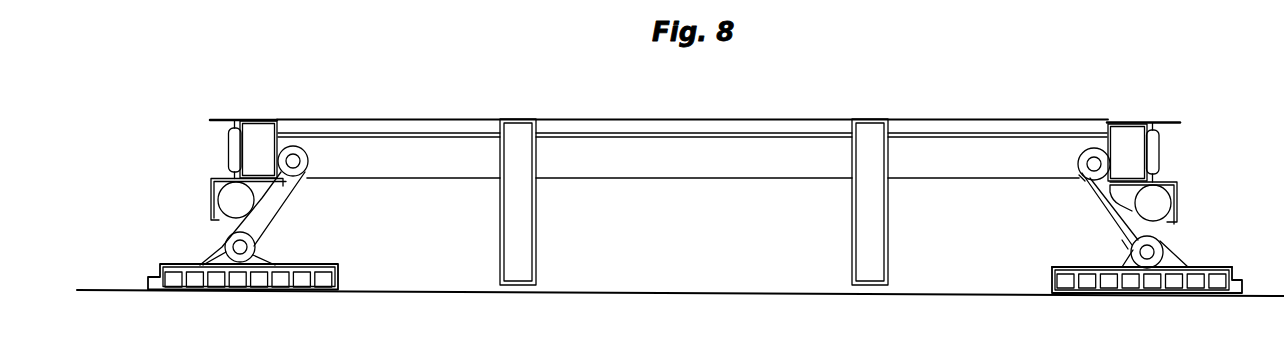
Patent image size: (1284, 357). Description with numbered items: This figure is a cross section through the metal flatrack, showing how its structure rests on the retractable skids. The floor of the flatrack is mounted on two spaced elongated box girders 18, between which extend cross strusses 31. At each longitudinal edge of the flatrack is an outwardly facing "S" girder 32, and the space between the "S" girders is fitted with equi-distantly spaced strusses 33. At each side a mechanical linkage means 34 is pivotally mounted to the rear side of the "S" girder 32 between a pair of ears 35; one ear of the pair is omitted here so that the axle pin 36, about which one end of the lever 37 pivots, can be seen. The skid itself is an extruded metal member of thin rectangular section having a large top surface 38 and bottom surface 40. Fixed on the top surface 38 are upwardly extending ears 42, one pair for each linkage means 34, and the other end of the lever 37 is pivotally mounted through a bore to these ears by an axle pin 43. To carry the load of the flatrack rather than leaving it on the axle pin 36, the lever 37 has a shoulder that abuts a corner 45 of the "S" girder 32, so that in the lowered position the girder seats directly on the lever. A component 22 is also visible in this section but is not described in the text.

The box girder 18 is at (533, 250).
The gas spring cylinder 22 is at (230, 148).
The cross struss 31 is at (662, 165).
The "S" girder 32 is at (257, 118).
The struss 33 is at (921, 172).
The mechanical linkage means 34 is at (1080, 217).
The ear 35 is at (282, 138).
The axle pin 36 is at (1081, 171).
The lever 37 is at (1117, 232).
The top surface 38 is at (1222, 270).
The bottom surface 40 is at (1200, 293).
The ear 42 is at (1168, 262).
The axle pin 43 is at (1147, 259).
The corner 45 is at (1113, 177).